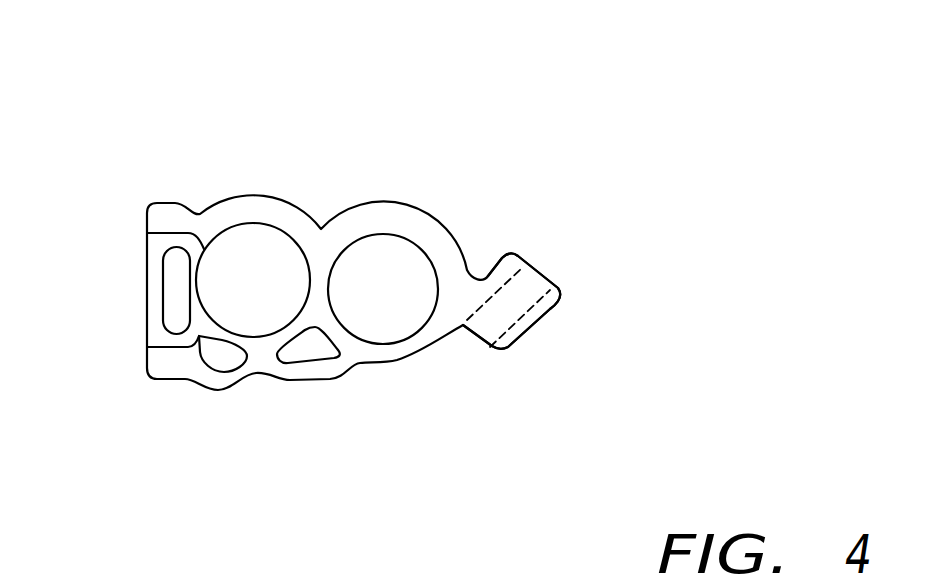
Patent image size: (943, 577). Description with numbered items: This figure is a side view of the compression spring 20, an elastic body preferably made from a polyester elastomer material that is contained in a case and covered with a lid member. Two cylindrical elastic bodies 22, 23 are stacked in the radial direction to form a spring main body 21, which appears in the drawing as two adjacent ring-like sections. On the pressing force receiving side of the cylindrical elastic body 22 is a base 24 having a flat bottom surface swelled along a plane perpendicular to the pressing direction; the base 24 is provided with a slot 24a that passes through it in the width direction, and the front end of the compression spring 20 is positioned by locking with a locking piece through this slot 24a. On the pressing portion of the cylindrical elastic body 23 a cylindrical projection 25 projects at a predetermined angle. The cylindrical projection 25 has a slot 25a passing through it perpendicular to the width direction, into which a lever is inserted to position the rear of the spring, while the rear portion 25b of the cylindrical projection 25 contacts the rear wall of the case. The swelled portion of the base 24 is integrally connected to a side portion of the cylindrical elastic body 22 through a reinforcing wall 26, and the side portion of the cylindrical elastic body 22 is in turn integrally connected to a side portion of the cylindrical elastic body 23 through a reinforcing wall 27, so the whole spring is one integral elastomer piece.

The compression spring 20 is at (228, 136).
The spring main body 21 is at (317, 199).
The cylindrical elastic body 22 is at (252, 195).
The cylindrical elastic body 23 is at (383, 222).
The base 24 is at (147, 258).
The slot 24a is at (165, 306).
The cylindrical projection 25 is at (543, 270).
The slot 25a is at (482, 413).
The rear portion 25b is at (550, 323).
The reinforcing wall 26 is at (220, 390).
The reinforcing wall 27 is at (312, 380).